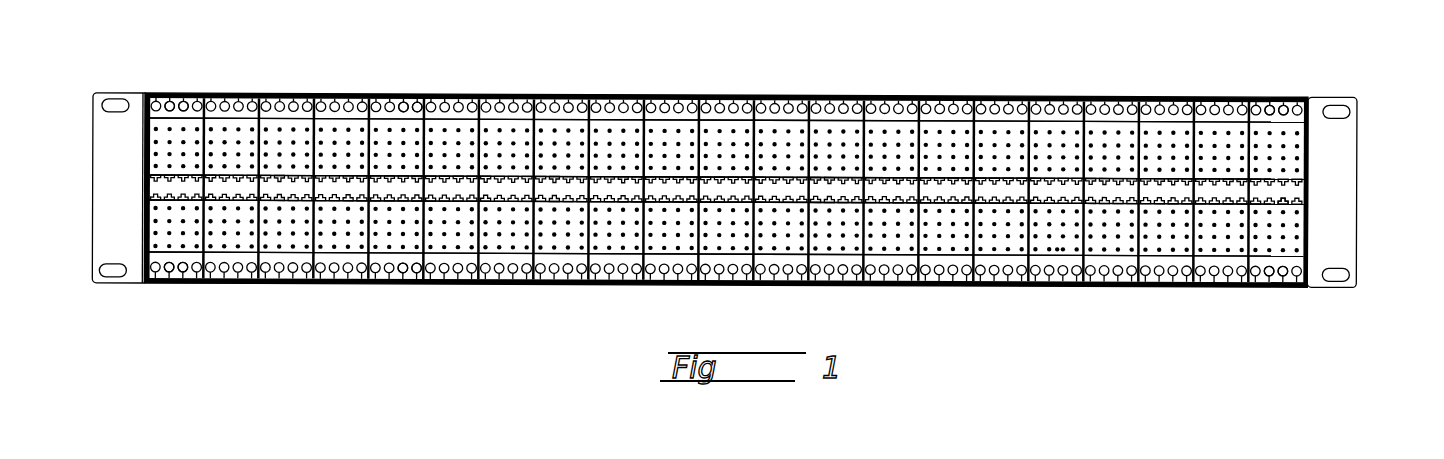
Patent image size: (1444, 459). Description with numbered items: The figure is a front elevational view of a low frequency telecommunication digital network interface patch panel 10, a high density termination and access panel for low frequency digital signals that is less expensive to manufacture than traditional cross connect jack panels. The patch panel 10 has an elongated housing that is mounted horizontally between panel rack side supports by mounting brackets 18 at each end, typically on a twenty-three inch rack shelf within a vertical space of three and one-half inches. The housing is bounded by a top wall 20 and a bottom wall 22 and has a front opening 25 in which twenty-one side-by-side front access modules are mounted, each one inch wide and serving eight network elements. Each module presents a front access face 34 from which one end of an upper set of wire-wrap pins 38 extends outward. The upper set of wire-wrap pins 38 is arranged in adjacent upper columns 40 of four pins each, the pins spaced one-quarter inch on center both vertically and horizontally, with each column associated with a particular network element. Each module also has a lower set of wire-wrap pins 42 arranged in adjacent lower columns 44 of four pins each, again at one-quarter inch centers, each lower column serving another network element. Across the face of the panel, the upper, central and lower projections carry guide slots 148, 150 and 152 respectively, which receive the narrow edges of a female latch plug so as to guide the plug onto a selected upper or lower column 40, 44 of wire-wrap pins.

The patch panel 10 is at (733, 70).
The mounting brackets 18 is at (103, 201).
The top wall 20 is at (552, 96).
The bottom wall 22 is at (560, 284).
The front opening 25 is at (143, 266).
The front access face 34 is at (1058, 250).
The upper set of wire-wrap pins 38 is at (153, 153).
The upper columns 40 is at (172, 100).
The lower set of wire-wrap pins 42 is at (153, 245).
The lower columns 44 is at (173, 282).
The guide slot 148 is at (1274, 104).
The guide slot 150 is at (1282, 209).
The guide slot 152 is at (1275, 288).